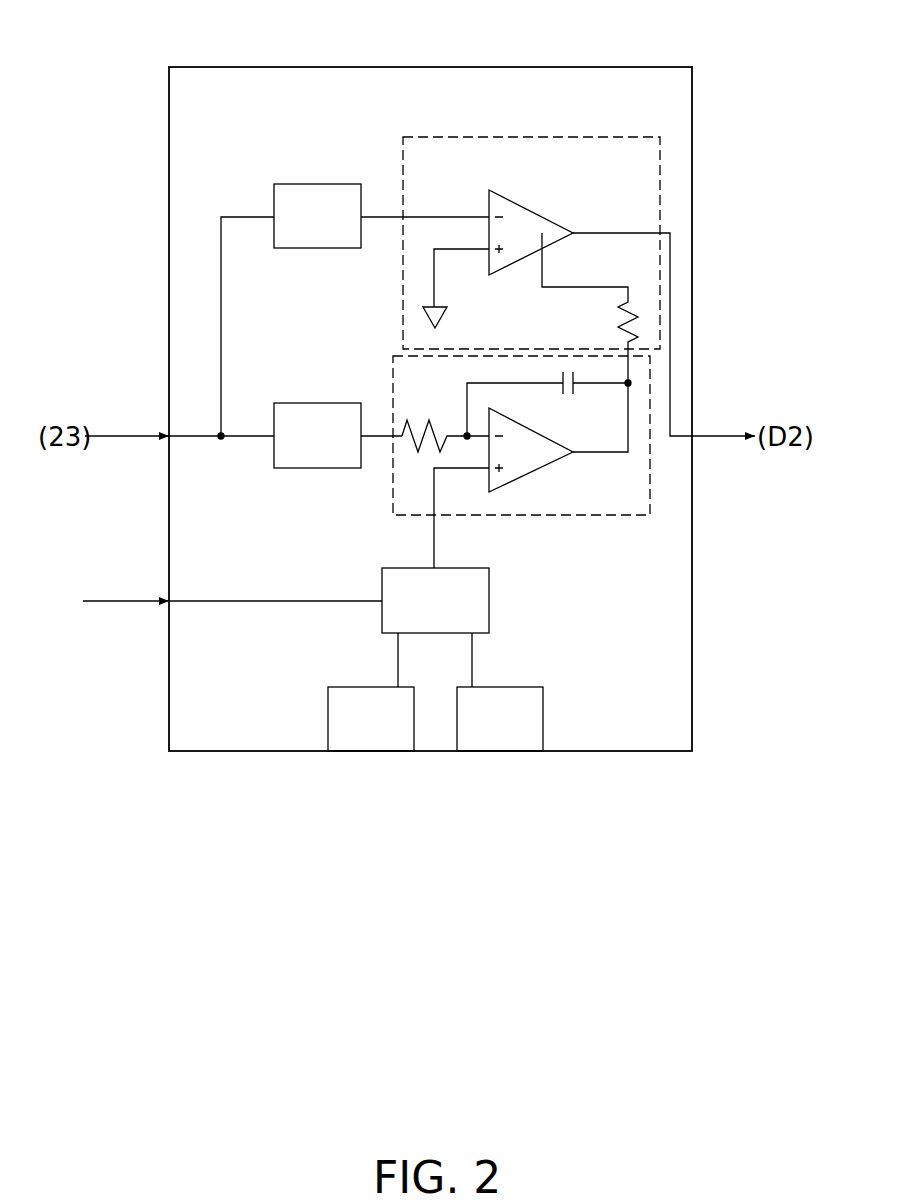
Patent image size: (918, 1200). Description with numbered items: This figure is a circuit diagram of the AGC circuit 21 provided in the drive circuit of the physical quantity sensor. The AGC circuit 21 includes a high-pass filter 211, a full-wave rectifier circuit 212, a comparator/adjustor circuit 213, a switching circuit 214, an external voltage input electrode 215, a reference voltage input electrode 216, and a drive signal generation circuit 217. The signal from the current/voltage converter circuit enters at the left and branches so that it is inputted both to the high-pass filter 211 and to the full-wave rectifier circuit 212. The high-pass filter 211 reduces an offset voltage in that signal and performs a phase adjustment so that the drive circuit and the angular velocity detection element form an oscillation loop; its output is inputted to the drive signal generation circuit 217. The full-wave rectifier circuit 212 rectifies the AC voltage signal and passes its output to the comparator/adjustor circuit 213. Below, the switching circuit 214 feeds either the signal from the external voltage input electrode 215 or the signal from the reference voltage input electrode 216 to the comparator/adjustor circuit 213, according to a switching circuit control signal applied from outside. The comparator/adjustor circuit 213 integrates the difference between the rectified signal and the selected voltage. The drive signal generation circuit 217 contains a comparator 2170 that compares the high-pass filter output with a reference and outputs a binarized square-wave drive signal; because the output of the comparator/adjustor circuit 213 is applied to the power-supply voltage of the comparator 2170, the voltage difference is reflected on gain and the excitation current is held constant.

The AGC circuit 21 is at (678, 66).
The high-pass filter 211 is at (322, 184).
The full-wave rectifier circuit 212 is at (322, 403).
The comparator/adjustor circuit 213 is at (623, 516).
The switching circuit 214 is at (490, 598).
The external voltage input electrode 215 is at (328, 718).
The reference voltage input electrode 216 is at (544, 714).
The drive signal generation circuit 217 is at (531, 228).
The comparator 2170 is at (527, 200).